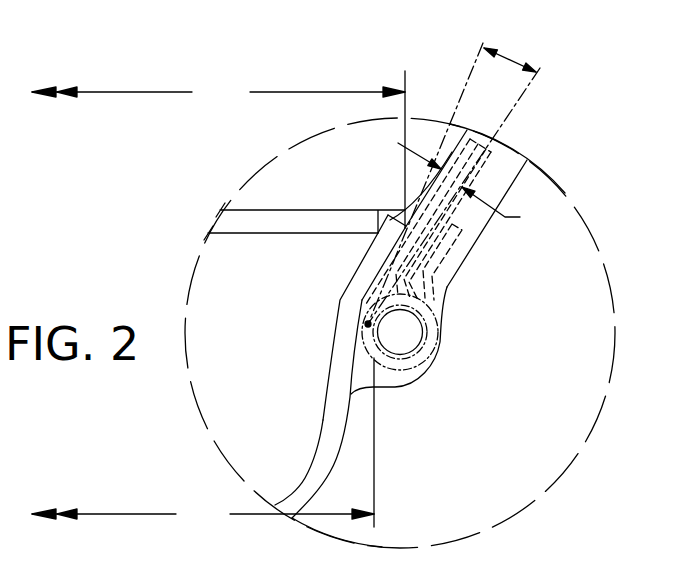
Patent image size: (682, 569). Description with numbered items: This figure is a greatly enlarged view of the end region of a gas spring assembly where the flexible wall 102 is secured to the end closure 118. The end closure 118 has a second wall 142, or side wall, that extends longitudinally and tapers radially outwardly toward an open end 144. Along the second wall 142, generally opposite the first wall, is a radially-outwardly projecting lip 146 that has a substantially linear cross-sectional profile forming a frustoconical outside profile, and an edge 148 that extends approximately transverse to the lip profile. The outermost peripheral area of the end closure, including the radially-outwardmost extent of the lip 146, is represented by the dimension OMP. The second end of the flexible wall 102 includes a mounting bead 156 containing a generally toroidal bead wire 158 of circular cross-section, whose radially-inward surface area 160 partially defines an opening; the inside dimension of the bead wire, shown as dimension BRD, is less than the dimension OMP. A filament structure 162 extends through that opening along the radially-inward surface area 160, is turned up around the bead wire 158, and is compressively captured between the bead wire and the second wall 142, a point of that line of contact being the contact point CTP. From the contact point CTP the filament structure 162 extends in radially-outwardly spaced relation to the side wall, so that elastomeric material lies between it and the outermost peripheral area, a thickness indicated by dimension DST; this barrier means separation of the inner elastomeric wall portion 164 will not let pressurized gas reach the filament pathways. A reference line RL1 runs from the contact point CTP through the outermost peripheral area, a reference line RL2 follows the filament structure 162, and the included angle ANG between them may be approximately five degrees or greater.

The flexible wall 102 is at (514, 180).
The end closure 118 is at (307, 453).
The second wall 142 is at (340, 343).
The open end 144 is at (238, 266).
The radially-outwardly projecting lip 146 is at (377, 260).
The edge 148 is at (393, 222).
The mounting bead 156 is at (443, 333).
The bead wire 158 is at (399, 334).
The radially-inward surface area 160 is at (379, 330).
The filament structure 162 is at (485, 151).
The inner elastomeric wall portion 164 is at (390, 215).
The contact point CTP is at (364, 321).
The reference line RL1 is at (470, 72).
The reference line RL2 is at (527, 90).
The included angle ANG is at (508, 55).
The distance DST is at (479, 185).
The outermost peripheral dimension OMP is at (218, 149).
The bead wire inside dimension BRD is at (203, 442).